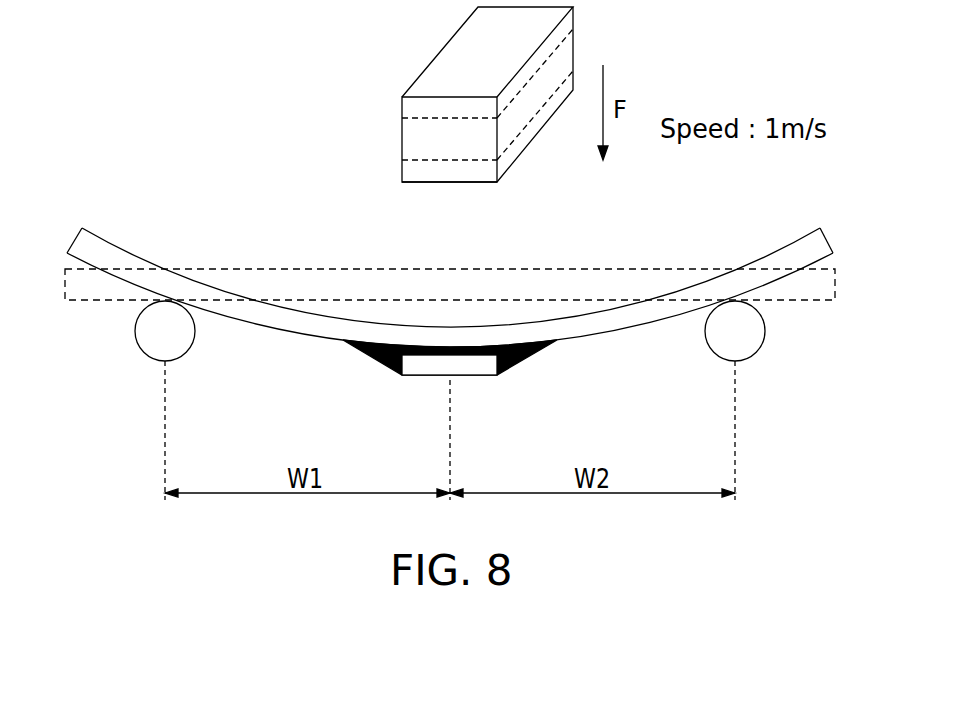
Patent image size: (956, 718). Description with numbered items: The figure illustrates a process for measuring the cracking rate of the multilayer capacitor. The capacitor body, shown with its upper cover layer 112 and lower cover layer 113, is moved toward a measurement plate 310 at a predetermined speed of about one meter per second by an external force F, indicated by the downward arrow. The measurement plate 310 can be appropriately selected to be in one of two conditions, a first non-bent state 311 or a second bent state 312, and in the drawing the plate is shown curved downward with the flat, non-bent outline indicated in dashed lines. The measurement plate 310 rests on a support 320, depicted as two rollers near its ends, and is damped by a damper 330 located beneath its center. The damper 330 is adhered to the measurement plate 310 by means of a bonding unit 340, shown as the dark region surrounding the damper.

The upper cover layer 112 is at (415, 108).
The lower cover layer 113 is at (415, 171).
The measurement plate 310 is at (205, 163).
The first non-bent state 311 is at (202, 268).
The second bent state 312 is at (90, 247).
The support 320 is at (145, 335).
The damper 330 is at (473, 370).
The bonding unit 340 is at (518, 368).